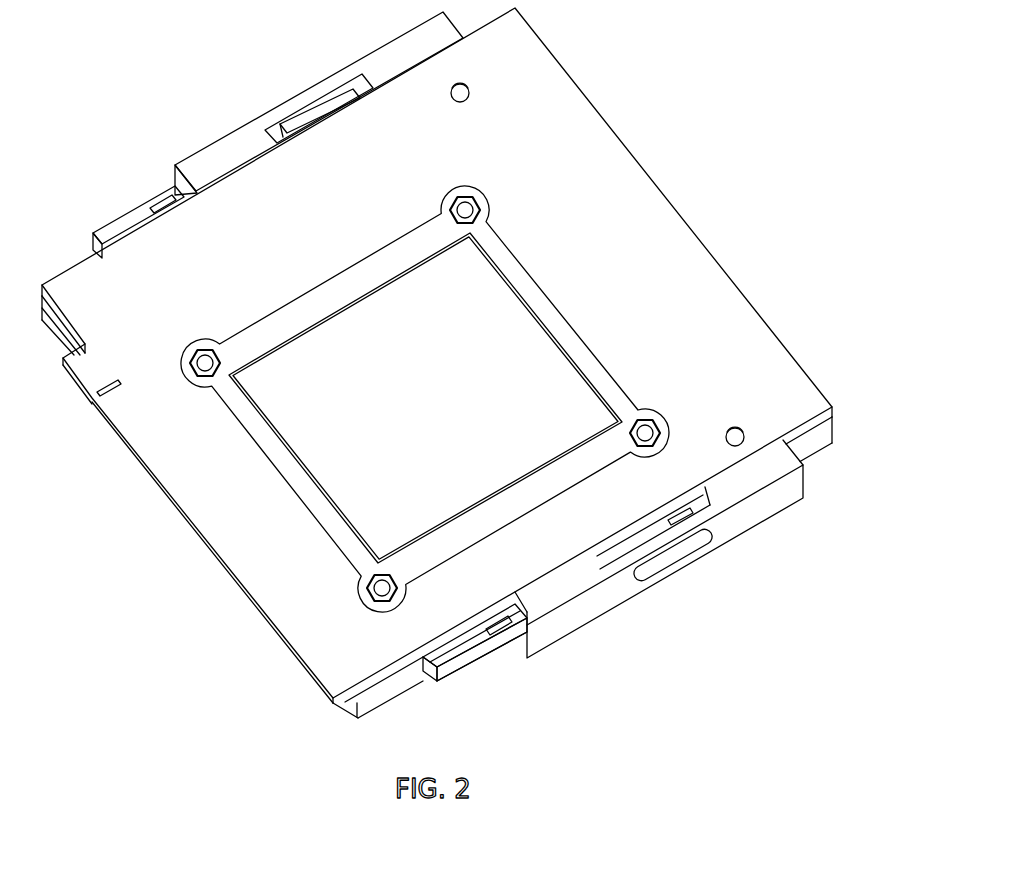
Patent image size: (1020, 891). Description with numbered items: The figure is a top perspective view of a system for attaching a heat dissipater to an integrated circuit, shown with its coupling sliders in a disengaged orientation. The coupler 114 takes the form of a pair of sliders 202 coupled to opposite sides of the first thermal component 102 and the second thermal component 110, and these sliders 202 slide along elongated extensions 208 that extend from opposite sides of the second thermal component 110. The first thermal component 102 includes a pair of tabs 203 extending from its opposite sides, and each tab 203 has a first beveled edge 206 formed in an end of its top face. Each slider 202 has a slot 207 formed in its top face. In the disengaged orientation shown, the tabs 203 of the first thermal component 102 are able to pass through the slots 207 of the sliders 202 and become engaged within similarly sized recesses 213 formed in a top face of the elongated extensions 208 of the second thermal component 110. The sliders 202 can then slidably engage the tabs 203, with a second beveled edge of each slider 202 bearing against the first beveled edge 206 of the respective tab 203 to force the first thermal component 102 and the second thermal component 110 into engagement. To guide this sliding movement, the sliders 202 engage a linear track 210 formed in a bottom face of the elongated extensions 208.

The first thermal component 102 is at (833, 417).
The second thermal component 110 is at (833, 432).
The coupler 114 is at (752, 545).
The sliders 202 is at (271, 112).
The tabs 203 is at (118, 230).
The first beveled edge 206 is at (159, 208).
The slot 207 is at (360, 78).
The elongated extensions 208 is at (503, 655).
The linear track 210 is at (427, 673).
The recesses 213 is at (463, 663).